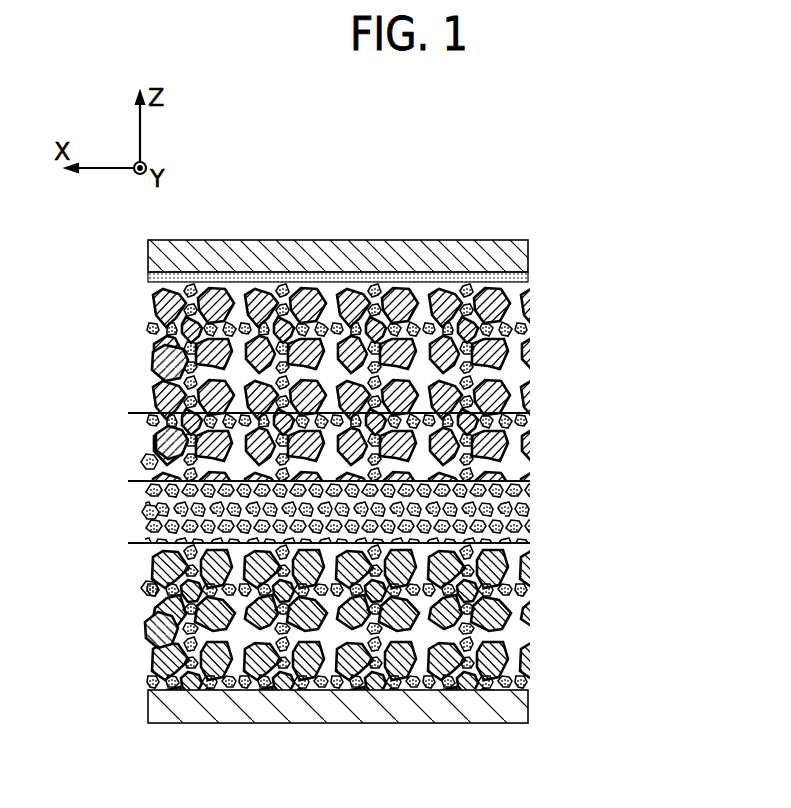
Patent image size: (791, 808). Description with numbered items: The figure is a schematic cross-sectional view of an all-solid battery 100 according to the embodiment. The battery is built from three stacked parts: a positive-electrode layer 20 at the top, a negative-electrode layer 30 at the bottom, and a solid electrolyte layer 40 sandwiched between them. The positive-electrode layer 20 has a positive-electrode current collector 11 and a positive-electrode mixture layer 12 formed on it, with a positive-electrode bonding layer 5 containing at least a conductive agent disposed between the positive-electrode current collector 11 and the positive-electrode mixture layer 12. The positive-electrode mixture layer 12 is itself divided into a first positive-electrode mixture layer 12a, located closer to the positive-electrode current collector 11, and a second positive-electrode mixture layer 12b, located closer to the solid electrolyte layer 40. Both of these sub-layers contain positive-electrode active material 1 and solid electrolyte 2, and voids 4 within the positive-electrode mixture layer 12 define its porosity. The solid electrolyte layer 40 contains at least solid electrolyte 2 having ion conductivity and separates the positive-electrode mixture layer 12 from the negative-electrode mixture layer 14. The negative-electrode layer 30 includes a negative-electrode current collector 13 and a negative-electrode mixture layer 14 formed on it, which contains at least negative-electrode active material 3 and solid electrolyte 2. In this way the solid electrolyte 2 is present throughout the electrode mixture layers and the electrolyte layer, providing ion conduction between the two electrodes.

The all-solid battery 100 is at (500, 208).
The positive-electrode layer 20 is at (706, 193).
The positive-electrode current collector 11 is at (530, 255).
The positive-electrode bonding layer 5 is at (530, 277).
The positive-electrode mixture layer 12 is at (632, 280).
The first positive-electrode mixture layer 12a is at (547, 281).
The second positive-electrode mixture layer 12b is at (547, 413).
The positive-electrode active material 1 is at (160, 360).
The voids 4 is at (160, 440).
The solid electrolyte layer 40 is at (547, 481).
The solid electrolyte 2 is at (145, 588).
The negative-electrode layer 30 is at (632, 543).
The negative-electrode mixture layer 14 is at (547, 543).
The negative-electrode active material 3 is at (150, 628).
The negative-electrode current collector 13 is at (530, 710).